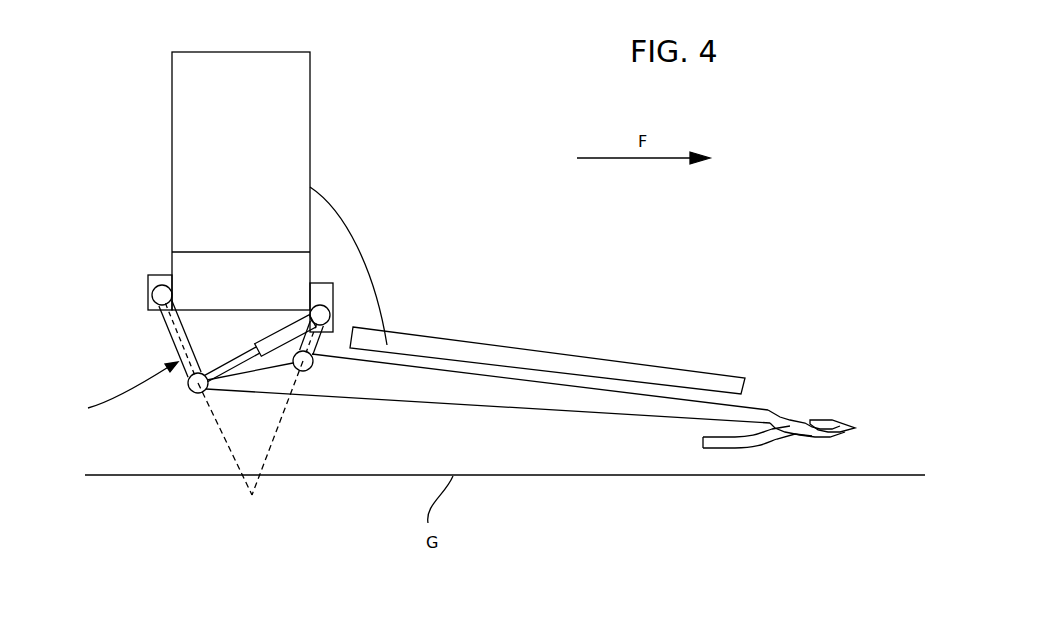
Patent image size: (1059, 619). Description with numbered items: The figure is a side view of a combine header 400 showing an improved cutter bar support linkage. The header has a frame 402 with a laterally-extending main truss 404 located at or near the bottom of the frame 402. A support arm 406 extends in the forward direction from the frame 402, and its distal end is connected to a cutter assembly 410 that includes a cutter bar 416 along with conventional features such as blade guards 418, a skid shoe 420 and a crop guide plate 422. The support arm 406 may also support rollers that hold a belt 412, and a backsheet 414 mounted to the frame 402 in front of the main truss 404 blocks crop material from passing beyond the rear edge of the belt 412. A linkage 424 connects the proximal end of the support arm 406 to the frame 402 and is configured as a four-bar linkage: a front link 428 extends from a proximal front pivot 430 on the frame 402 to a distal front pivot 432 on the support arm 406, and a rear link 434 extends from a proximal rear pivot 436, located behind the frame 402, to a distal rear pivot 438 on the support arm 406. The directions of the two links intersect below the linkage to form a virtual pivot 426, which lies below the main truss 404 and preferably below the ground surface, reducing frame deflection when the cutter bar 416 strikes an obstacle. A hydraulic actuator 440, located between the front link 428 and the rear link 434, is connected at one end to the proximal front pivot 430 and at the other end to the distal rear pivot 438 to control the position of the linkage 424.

The combine header 400 is at (487, 136).
The frame 402 is at (193, 120).
The main truss 404 is at (190, 253).
The support arm 406 is at (541, 411).
The cutter assembly 410 is at (790, 389).
The belt 412 is at (598, 358).
The backsheet 414 is at (362, 253).
The cutter bar 416 is at (822, 437).
The blade guards 418 is at (832, 414).
The skid shoe 420 is at (730, 447).
The crop guide plate 422 is at (760, 390).
The linkage 424 is at (118, 393).
The virtual pivot 426 is at (248, 500).
The front link 428 is at (322, 345).
The proximal front pivot 430 is at (330, 313).
The distal front pivot 432 is at (316, 348).
The rear link 434 is at (178, 341).
The proximal rear pivot 436 is at (153, 292).
The distal rear pivot 438 is at (191, 391).
The hydraulic actuator 440 is at (248, 368).